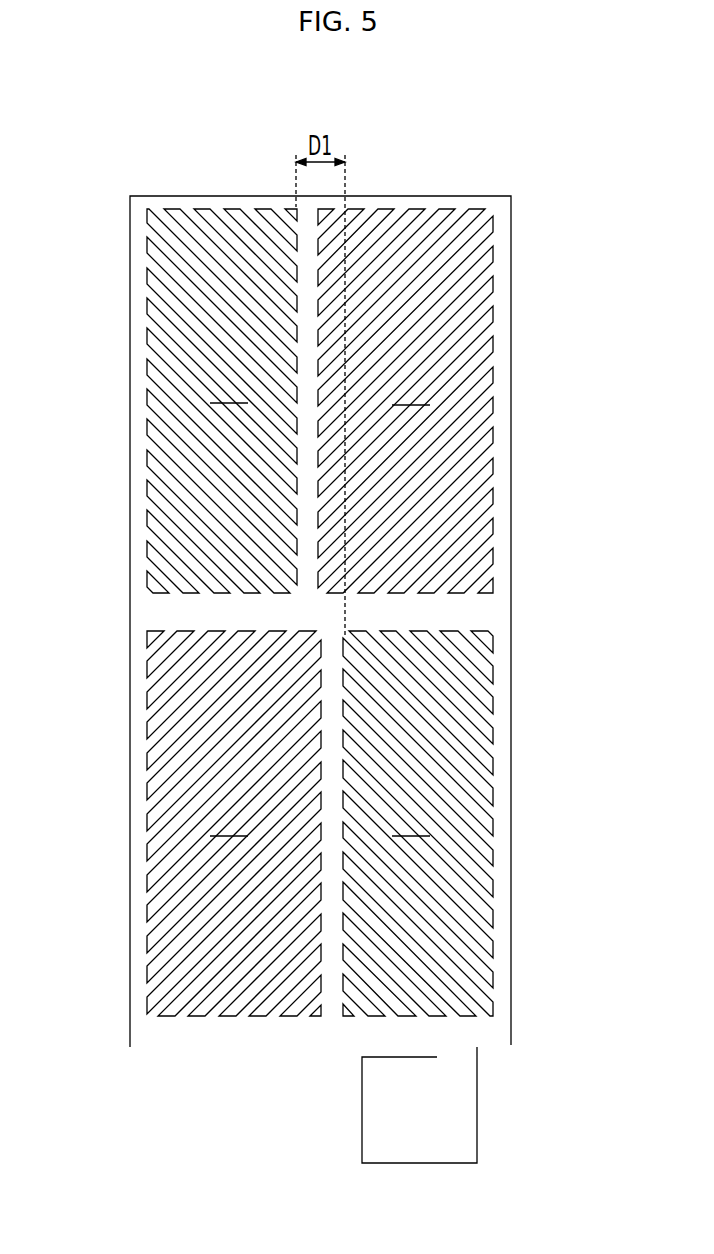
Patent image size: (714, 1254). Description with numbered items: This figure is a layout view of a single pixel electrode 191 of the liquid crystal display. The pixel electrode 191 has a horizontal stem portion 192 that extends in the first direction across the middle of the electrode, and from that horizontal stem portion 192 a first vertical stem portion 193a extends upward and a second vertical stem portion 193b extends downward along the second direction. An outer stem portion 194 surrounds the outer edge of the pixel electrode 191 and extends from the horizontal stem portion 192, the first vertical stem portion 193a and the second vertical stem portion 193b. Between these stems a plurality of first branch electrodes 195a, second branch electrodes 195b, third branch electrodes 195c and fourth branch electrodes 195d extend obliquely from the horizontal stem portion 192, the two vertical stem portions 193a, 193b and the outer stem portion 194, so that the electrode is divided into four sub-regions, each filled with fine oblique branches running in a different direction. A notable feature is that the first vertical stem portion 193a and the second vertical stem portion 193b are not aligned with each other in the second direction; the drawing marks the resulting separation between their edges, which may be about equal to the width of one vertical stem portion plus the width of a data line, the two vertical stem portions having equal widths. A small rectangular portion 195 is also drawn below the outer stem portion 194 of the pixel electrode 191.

The pixel electrode 191 is at (511, 124).
The horizontal stem portion 192 is at (405, 583).
The first vertical stem portion 193a is at (300, 362).
The second vertical stem portion 193b is at (343, 890).
The outer stem portion 194 is at (460, 195).
The extension portion 195 is at (477, 1108).
The first branch electrodes 195a is at (200, 295).
The second branch electrodes 195b is at (440, 270).
The third branch electrodes 195c is at (200, 682).
The fourth branch electrodes 195d is at (447, 694).